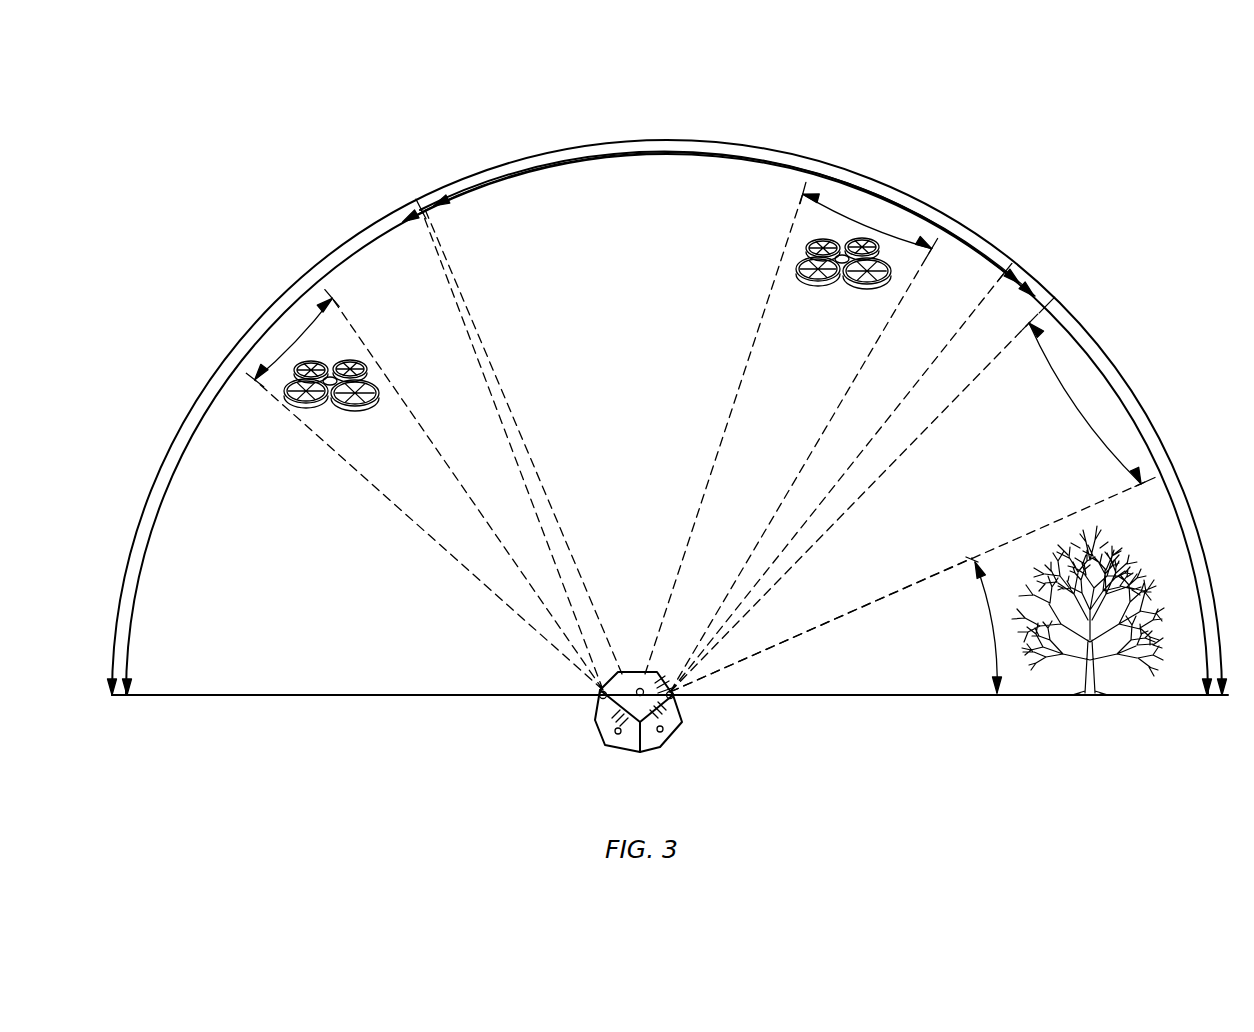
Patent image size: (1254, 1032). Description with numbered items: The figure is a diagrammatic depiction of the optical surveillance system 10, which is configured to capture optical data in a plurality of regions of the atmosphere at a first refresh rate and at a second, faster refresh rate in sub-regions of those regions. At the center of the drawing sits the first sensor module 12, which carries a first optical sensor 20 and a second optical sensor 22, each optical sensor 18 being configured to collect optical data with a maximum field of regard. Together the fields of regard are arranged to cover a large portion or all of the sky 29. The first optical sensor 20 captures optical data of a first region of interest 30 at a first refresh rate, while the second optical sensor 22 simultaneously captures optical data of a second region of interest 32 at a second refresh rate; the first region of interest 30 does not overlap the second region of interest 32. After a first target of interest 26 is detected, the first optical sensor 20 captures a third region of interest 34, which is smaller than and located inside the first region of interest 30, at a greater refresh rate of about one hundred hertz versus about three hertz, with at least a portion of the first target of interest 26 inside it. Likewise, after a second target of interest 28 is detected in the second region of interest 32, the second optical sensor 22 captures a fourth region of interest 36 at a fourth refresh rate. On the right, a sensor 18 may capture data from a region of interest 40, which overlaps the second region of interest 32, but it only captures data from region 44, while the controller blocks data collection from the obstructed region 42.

The optical surveillance system 10 is at (689, 694).
The first sensor module 12 is at (581, 747).
The optical sensor 18 is at (678, 758).
The first optical sensor 20 is at (585, 709).
The second optical sensor 22 is at (637, 656).
The first target of interest 26 is at (347, 341).
The second target of interest 28 is at (820, 305).
The sky 29 is at (505, 157).
The first region of interest 30 is at (177, 466).
The second region of interest 32 is at (683, 151).
The third region of interest 34 is at (290, 336).
The fourth region of interest 36 is at (877, 213).
The region of interest 40 is at (1143, 409).
The obstructed region 42 is at (985, 630).
The region 44 is at (1082, 382).